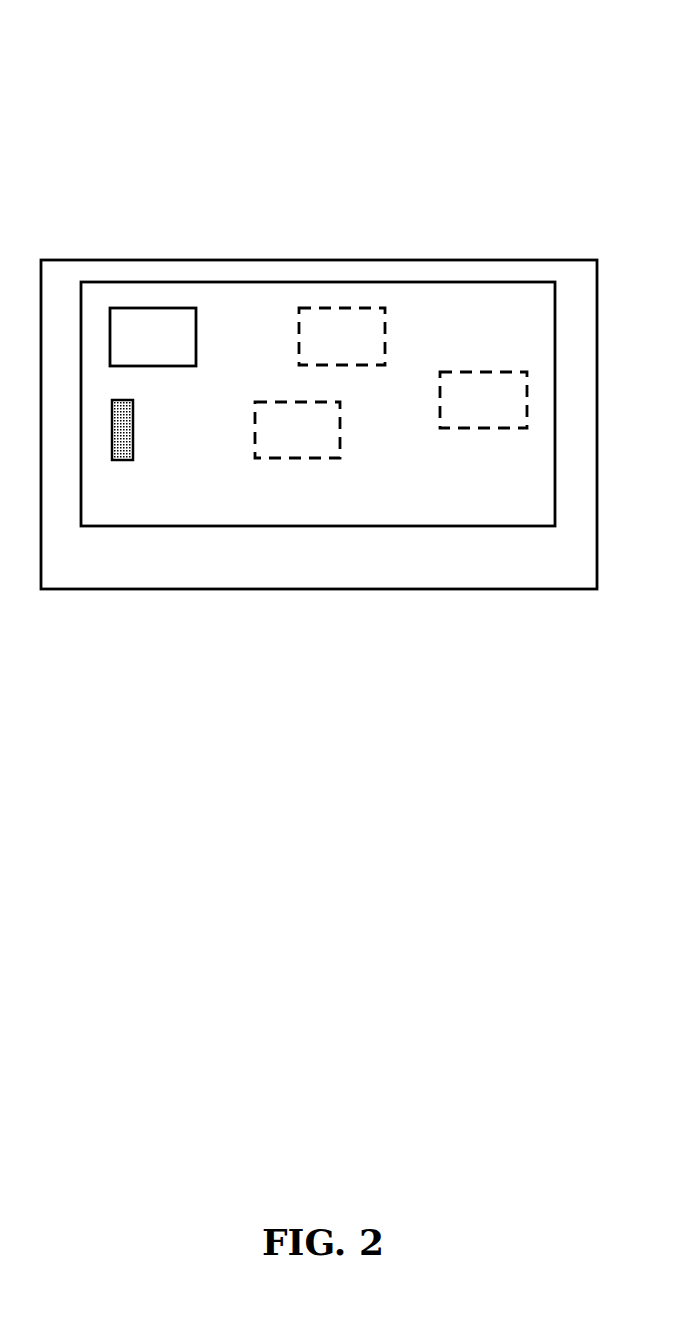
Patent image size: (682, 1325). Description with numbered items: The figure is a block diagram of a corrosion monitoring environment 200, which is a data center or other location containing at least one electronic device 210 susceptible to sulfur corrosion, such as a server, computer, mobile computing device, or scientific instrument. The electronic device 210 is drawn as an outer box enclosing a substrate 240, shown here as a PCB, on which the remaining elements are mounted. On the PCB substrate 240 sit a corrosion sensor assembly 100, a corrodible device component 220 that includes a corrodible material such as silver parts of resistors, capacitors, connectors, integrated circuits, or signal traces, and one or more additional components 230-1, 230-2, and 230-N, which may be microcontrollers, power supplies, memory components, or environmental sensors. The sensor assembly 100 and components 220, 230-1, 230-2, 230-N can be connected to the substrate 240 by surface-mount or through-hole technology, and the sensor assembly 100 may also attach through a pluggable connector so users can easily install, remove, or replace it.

The corrosion monitoring environment 200 is at (52, 68).
The electronic device 210 is at (319, 424).
The substrate 240 is at (318, 404).
The corrosion sensor assembly 100 is at (197, 327).
The corrodible device component 220 is at (134, 430).
The additional component 230-1 is at (386, 324).
The additional component 230-2 is at (378, 429).
The additional component 230-N is at (494, 430).